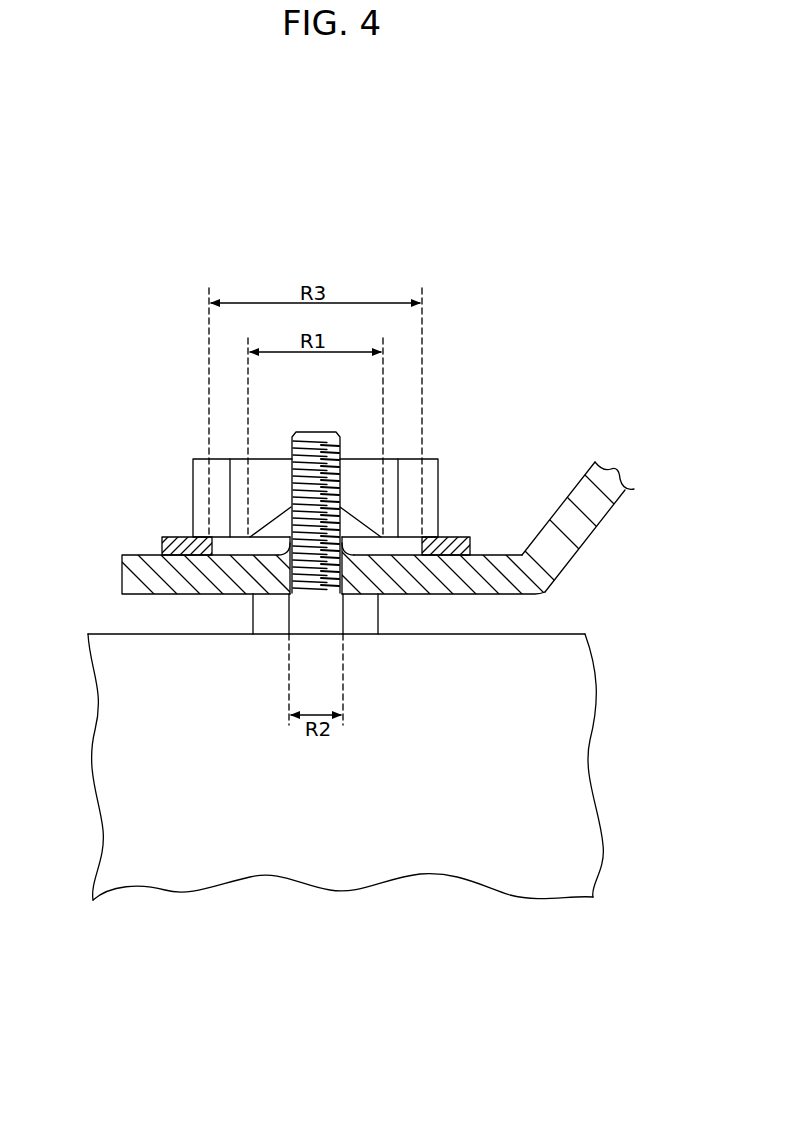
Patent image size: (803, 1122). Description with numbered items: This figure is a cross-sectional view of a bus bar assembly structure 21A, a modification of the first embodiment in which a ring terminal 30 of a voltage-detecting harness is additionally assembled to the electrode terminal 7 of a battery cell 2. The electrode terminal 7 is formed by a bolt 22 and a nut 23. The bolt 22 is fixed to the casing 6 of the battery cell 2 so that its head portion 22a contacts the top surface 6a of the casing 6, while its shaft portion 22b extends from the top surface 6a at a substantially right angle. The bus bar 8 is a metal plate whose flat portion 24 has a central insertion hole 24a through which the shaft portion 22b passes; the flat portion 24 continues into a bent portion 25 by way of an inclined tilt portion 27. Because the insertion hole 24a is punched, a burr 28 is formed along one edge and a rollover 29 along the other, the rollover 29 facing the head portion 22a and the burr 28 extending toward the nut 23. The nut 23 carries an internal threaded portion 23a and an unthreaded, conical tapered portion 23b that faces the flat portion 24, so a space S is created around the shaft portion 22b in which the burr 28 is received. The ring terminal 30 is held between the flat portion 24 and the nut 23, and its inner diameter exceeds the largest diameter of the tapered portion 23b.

The bus bar assembly structure 21A is at (108, 376).
The battery cell 2 is at (68, 678).
The casing 6 is at (572, 750).
The top surface 6a is at (107, 634).
The electrode terminal 7 is at (445, 443).
The bus bar 8 is at (115, 547).
The bolt 22 is at (270, 625).
The head portion 22a is at (378, 610).
The shaft portion 22b is at (341, 478).
The nut 23 is at (201, 466).
The threaded portion 23a is at (304, 462).
The tapered portion 23b is at (362, 520).
The flat portion 24 is at (140, 560).
The insertion hole 24a is at (289, 588).
The bent portion 25 is at (575, 460).
The tilt portion 27 is at (562, 515).
The burr 28 is at (285, 548).
The rollover 29 is at (353, 613).
The ring terminal 30 is at (170, 541).
The space S is at (265, 524).